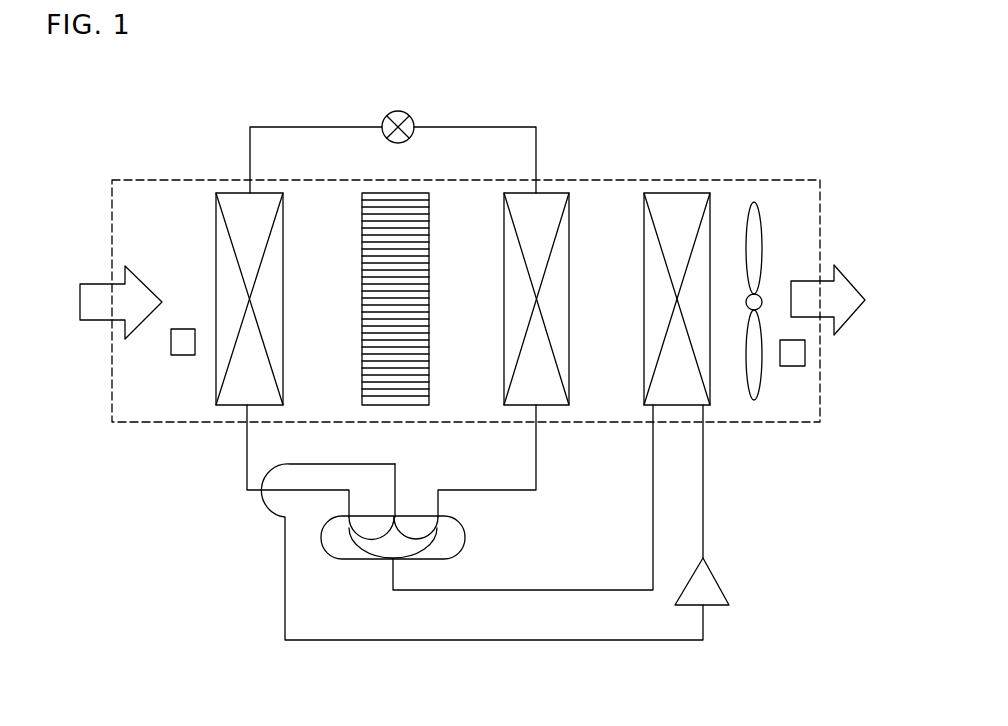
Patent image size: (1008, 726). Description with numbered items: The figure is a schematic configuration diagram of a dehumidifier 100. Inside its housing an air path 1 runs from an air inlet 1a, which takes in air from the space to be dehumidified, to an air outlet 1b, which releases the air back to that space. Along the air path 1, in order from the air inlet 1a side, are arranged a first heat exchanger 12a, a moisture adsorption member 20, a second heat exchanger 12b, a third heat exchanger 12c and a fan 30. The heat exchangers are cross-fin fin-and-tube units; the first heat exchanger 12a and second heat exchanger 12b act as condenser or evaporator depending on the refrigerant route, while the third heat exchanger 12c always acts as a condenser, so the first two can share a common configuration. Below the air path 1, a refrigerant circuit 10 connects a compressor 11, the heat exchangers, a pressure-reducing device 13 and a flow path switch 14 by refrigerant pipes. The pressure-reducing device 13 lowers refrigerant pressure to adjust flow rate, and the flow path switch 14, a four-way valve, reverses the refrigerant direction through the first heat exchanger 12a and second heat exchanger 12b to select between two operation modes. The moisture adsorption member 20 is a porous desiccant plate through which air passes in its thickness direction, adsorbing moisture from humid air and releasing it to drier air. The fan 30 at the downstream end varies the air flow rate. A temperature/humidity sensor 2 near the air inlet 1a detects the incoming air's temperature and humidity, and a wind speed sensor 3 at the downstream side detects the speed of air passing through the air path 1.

The air path 1 is at (155, 180).
The air inlet 1a is at (112, 320).
The air outlet 1b is at (822, 276).
The temperature/humidity sensor 2 is at (170, 347).
The wind speed sensor 3 is at (790, 368).
The refrigerant circuit 10 is at (252, 558).
The compressor 11 is at (718, 585).
The first heat exchanger 12a is at (260, 193).
The second heat exchanger 12b is at (548, 193).
The third heat exchanger 12c is at (682, 193).
The pressure-reducing device 13 is at (408, 113).
The flow path switch 14 is at (465, 535).
The moisture adsorption member 20 is at (410, 193).
The fan 30 is at (760, 216).
The dehumidifier 100 is at (518, 693).